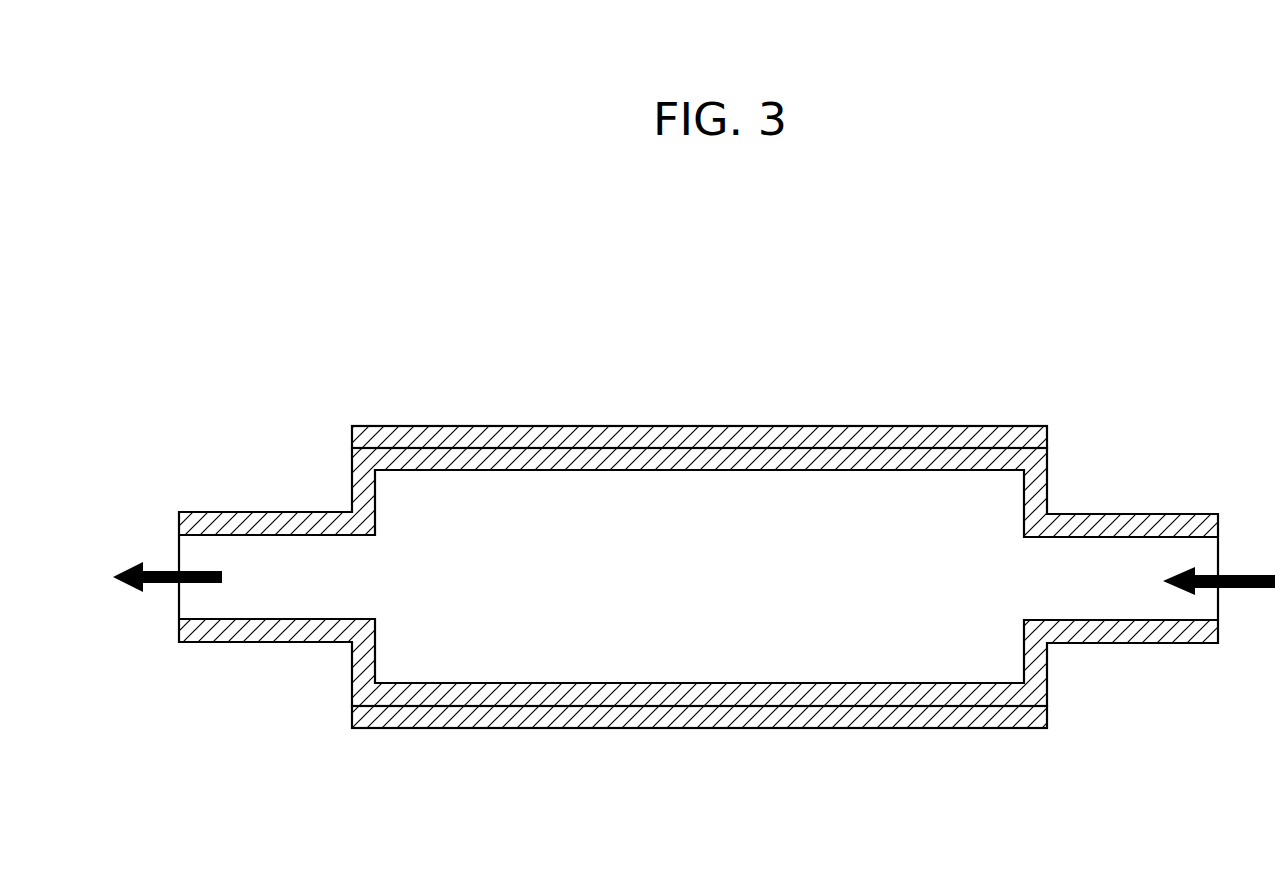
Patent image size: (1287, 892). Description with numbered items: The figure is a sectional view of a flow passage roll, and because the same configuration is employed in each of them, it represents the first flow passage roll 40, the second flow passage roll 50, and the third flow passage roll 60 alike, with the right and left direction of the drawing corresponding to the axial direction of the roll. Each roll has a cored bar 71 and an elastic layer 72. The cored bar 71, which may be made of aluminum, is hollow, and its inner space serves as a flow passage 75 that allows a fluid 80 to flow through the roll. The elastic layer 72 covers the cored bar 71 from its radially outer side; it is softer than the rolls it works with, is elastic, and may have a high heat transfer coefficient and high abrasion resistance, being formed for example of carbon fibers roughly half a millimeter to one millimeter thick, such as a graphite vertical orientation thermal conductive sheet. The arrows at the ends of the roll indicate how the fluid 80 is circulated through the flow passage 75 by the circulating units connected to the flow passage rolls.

The first flow passage roll 40 is at (694, 476).
The second flow passage roll 50 is at (694, 476).
The third flow passage roll 60 is at (694, 476).
The cored bar 71 is at (490, 453).
The elastic layer 72 is at (422, 435).
The flow passage 75 is at (698, 501).
The fluid 80 is at (718, 591).